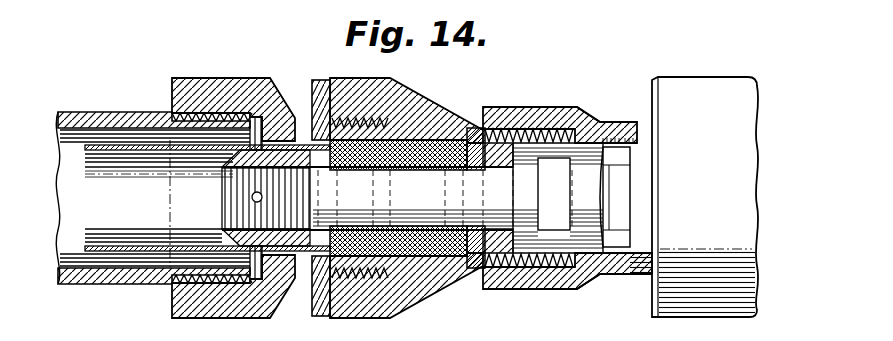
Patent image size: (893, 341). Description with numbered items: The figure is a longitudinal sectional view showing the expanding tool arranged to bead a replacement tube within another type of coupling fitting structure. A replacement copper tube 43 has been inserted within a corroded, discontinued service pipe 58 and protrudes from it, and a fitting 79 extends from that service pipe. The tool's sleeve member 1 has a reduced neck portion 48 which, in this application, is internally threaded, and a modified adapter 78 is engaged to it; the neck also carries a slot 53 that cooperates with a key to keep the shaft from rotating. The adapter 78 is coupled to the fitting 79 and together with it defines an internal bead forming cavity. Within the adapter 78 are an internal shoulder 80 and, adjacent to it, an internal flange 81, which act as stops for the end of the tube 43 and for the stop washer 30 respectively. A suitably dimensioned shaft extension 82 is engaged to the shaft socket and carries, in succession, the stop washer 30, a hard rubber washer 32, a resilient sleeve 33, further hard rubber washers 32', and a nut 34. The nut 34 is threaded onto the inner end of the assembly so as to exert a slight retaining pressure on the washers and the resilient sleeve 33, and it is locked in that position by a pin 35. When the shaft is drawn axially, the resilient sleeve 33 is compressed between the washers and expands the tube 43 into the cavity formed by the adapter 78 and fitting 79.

The sleeve member 1 is at (693, 77).
The stop washer 30 is at (480, 130).
The hard rubber washer 32 is at (468, 177).
The hard rubber washers 32' is at (323, 185).
The resilient sleeve 33 is at (420, 140).
The nut 34 is at (243, 150).
The pin 35 is at (253, 197).
The copper tube 43 is at (80, 250).
The neck portion 48 is at (595, 114).
The slot 53 is at (616, 141).
The discontinued service pipe 58 is at (107, 273).
The adapter 78 is at (393, 92).
The fitting 79 is at (190, 92).
The internal shoulder 80 is at (483, 250).
The internal flange 81 is at (500, 131).
The shaft extension 82 is at (522, 207).